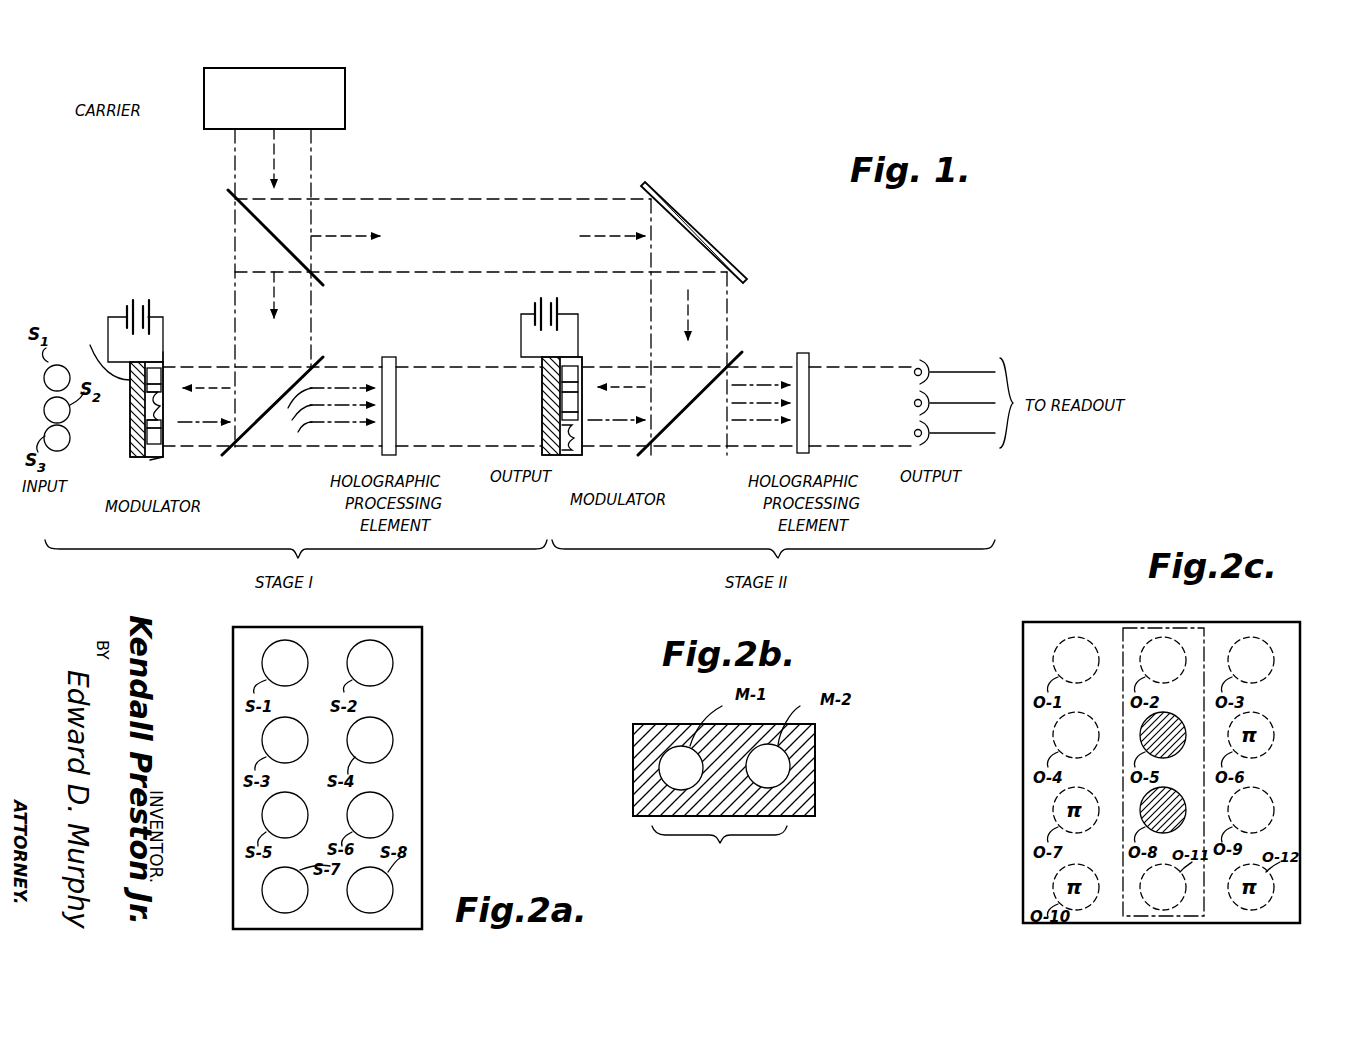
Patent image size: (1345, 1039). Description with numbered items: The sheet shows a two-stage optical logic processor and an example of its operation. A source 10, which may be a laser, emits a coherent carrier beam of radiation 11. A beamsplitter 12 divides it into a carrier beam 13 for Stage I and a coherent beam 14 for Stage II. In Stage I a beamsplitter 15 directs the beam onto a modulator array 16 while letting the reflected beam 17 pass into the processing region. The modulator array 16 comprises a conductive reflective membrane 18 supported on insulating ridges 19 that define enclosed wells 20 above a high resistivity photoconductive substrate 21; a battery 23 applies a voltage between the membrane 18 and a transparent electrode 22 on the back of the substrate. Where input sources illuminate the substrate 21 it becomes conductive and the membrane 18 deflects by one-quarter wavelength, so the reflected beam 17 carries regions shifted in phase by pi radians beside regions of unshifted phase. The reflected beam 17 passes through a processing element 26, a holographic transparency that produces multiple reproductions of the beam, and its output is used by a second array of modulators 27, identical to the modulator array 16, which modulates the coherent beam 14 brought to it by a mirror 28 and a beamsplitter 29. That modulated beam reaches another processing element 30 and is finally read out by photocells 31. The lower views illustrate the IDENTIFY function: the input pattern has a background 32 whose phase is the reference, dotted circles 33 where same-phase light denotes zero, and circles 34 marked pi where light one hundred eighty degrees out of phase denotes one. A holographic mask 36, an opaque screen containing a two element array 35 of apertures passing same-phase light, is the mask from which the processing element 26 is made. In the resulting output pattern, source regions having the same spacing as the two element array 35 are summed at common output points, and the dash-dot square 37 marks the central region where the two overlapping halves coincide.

In FIG. 1, the source 10 is at (345, 97).
In FIG. 1, the carrier beam of radiation 11 is at (274, 158).
In FIG. 1, the beamsplitter 12 is at (228, 197).
In FIG. 1, the carrier beam 13 is at (272, 276).
In FIG. 1, the coherent beam 14 is at (349, 236).
In FIG. 1, the beamsplitter 15 is at (323, 357).
In FIG. 1, the modulator array 16 is at (138, 460).
In FIG. 1, the reflected beam 17 is at (212, 455).
In FIG. 1, the conductive reflective membrane 18 is at (160, 380).
In FIG. 1, the insulating ridges 19 is at (150, 365).
In FIG. 1, the wells 20 is at (158, 372).
In FIG. 1, the photoconductive substrate 21 is at (137, 425).
In FIG. 1, the transparent electrode 22 is at (101, 351).
In FIG. 1, the battery 23 is at (136, 300).
In FIG. 1, the processing element 26 is at (396, 357).
In FIG. 1, the second array of modulators 27 is at (592, 352).
In FIG. 1, the mirror 28 is at (655, 189).
In FIG. 1, the beamsplitter 29 is at (742, 352).
In FIG. 1, the processing element 30 is at (809, 353).
In FIG. 1, the photocells 31 is at (932, 368).
In FIG. 2A, the background 32 is at (422, 653).
In FIG. 2A, the dotted circles 33 is at (295, 641).
In FIG. 2A, the circles marked pi 34 is at (392, 742).
In FIG. 2B, the two element array 35 is at (719, 848).
In FIG. 2B, the holographic mask 36 is at (633, 724).
In FIG. 2C, the dash-dot square 37 is at (1143, 628).